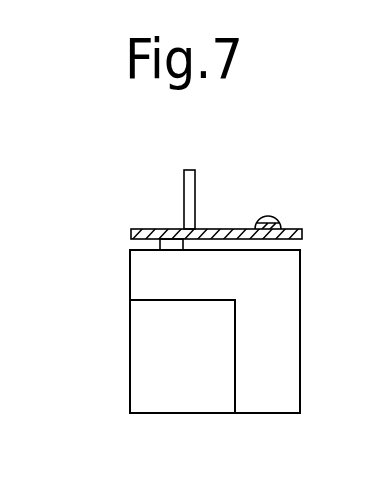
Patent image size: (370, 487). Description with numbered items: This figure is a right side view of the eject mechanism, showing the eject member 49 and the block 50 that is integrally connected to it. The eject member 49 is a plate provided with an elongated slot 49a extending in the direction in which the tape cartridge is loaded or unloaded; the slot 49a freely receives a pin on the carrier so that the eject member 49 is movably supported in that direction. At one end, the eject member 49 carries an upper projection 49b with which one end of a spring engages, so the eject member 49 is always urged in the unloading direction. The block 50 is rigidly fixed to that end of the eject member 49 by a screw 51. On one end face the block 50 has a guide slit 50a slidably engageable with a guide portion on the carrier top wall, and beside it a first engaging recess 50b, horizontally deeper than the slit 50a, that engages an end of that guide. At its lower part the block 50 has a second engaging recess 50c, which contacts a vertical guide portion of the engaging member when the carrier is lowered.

The eject member 49 is at (155, 229).
The elongated slot 49a is at (223, 229).
The upper projection 49b is at (190, 170).
The block 50 is at (300, 257).
The guide slit 50a is at (160, 243).
The first engaging recess 50b is at (183, 247).
The second engaging recess 50c is at (223, 400).
The screw 51 is at (268, 215).